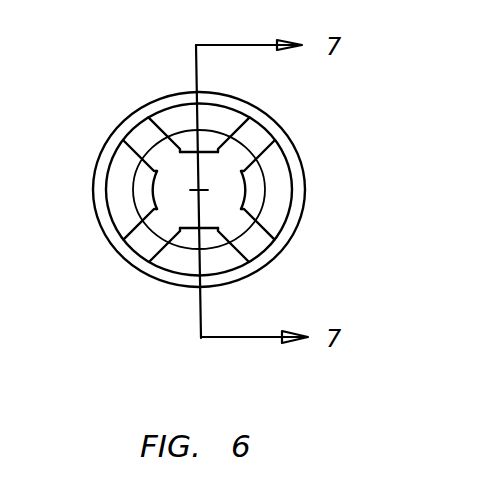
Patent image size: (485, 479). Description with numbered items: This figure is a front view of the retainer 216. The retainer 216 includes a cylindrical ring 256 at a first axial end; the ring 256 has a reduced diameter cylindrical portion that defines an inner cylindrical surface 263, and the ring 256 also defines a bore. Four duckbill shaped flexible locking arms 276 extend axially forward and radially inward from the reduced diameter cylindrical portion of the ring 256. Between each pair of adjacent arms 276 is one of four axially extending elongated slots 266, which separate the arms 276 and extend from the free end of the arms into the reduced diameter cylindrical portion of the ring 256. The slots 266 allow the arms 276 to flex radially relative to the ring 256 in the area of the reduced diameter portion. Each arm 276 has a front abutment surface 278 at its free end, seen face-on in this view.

The retainer 216 is at (130, 280).
The cylindrical ring 256 is at (160, 102).
The inner cylindrical surface 263 is at (182, 192).
The axially extending elongated slots 266 is at (167, 152).
The duckbill shaped flexible locking arms 276 is at (230, 113).
The front abutment surface 278 is at (147, 194).